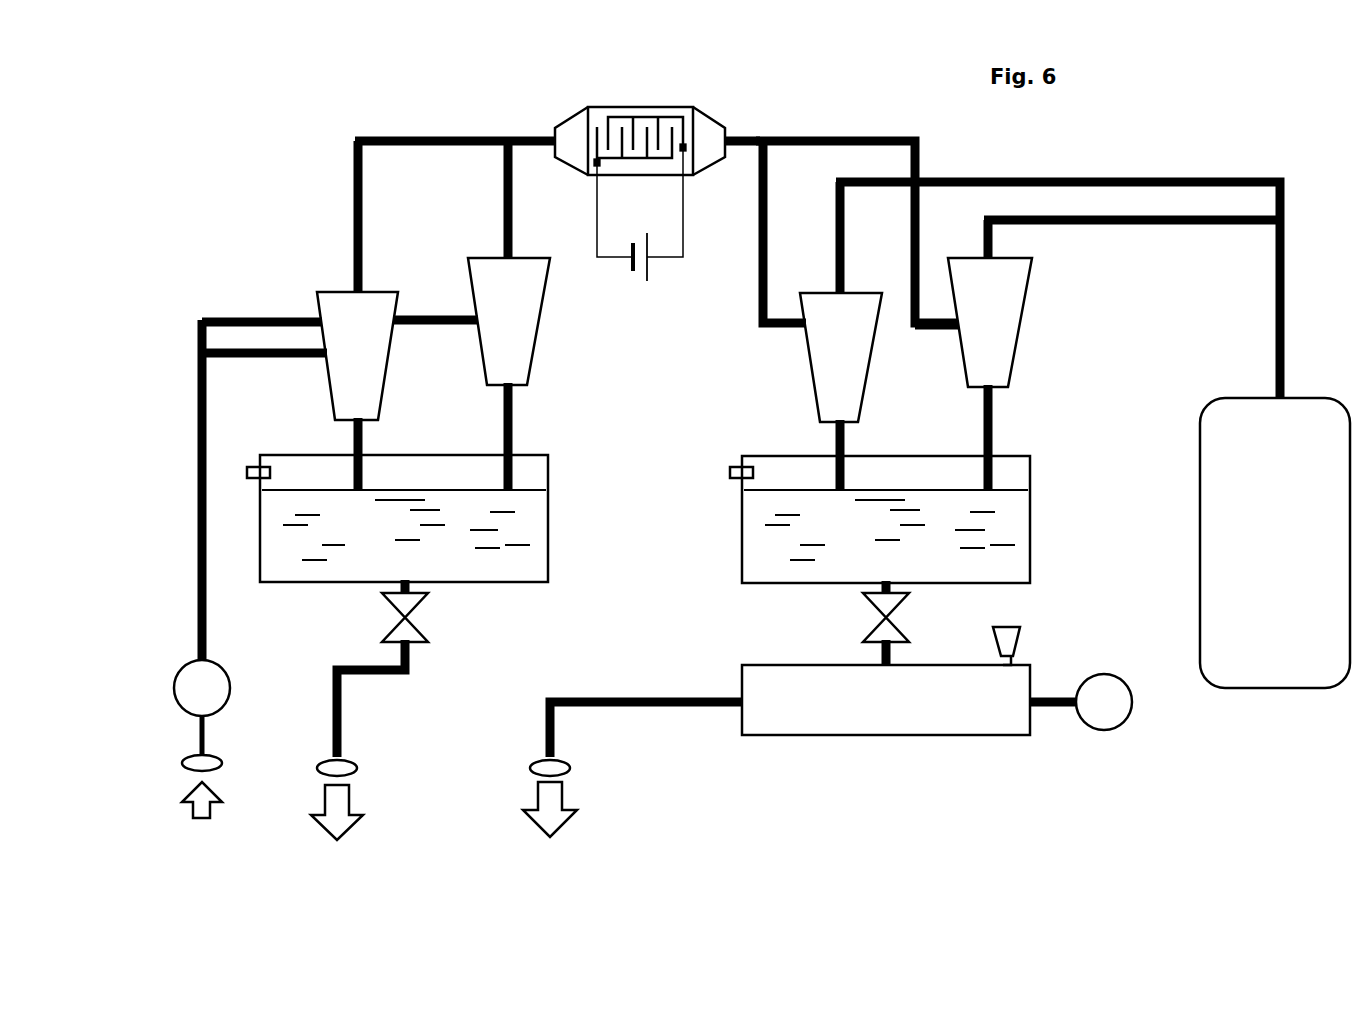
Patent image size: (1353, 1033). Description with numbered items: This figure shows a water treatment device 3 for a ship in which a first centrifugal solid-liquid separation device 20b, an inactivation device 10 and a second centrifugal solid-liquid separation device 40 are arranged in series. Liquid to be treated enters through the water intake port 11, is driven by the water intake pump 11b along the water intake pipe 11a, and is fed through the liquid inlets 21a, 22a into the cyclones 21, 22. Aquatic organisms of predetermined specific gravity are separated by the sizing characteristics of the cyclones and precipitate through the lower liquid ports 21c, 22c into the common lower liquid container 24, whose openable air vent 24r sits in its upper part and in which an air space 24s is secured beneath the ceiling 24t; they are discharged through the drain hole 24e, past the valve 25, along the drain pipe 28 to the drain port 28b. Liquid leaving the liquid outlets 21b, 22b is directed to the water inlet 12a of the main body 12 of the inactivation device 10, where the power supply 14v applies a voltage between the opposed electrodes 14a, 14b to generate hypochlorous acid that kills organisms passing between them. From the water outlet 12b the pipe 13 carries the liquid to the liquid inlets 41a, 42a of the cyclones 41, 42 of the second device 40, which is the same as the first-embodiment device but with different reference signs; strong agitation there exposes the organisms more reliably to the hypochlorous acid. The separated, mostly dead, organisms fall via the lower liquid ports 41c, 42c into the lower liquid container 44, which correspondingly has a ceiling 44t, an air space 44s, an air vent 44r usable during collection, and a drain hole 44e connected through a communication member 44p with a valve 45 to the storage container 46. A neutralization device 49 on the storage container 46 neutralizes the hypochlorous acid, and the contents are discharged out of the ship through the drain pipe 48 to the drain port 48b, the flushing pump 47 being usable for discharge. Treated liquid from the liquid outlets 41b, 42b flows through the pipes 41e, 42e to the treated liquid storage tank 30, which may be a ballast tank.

The water treatment device 3 is at (176, 141).
The inactivation device 10 is at (581, 186).
The main body 12 is at (611, 176).
The water inlet 12a is at (556, 133).
The water outlet 12b is at (733, 134).
The pipe 13 is at (842, 132).
The opposed electrode 14a is at (664, 117).
The opposed electrode 14b is at (637, 163).
The power supply 14v is at (649, 281).
The first centrifugal solid-liquid separation device 20b is at (259, 251).
The cyclone 21 is at (357, 356).
The liquid inlet 21a is at (316, 316).
The liquid outlet 21b is at (352, 284).
The lower liquid port 21c is at (352, 426).
The cyclone 22 is at (509, 321).
The liquid inlet 22a is at (471, 316).
The liquid outlet 22b is at (503, 255).
The lower liquid port 22c is at (507, 388).
The lower liquid container 24 is at (445, 500).
The ceiling 24t is at (440, 460).
The air vent 24r is at (246, 482).
The air space 24s is at (530, 483).
The drain hole 24e is at (402, 584).
The valve 25 is at (410, 618).
The drain pipe 28 is at (343, 698).
The drain port 28b is at (360, 760).
The water intake port 11 is at (182, 760).
The water intake pipe 11a is at (196, 585).
The water intake pump 11b is at (173, 683).
The second centrifugal solid-liquid separation device 40 is at (726, 363).
The cyclone 41 is at (841, 357).
The liquid inlet 41a is at (790, 326).
The liquid outlet 41b is at (836, 290).
The third funnel lower pipe 41c is at (830, 424).
The return pipe from tank 30 41e is at (990, 178).
The cyclone 42 is at (990, 322).
The liquid inlet 42a is at (960, 328).
The liquid outlet 42b is at (994, 248).
The fourth funnel lower pipe 42c is at (992, 392).
The second return pipe 42e is at (1122, 224).
The lower liquid container 44 is at (904, 492).
The second tank top space 44t is at (945, 458).
The air vent 44r is at (729, 472).
The stored liquid (44x) 44s is at (1015, 478).
The second tank outlet 44e is at (884, 582).
The second tank drain pipe 44p is at (883, 658).
The second valve 45 is at (890, 622).
The storage container 46 is at (886, 700).
The flushing pump 47 is at (1128, 722).
The discharge pipe 48 is at (706, 698).
The drain port 48b is at (572, 765).
The neutralization device 49 is at (1022, 645).
The treated liquid storage tank 30 is at (1275, 543).